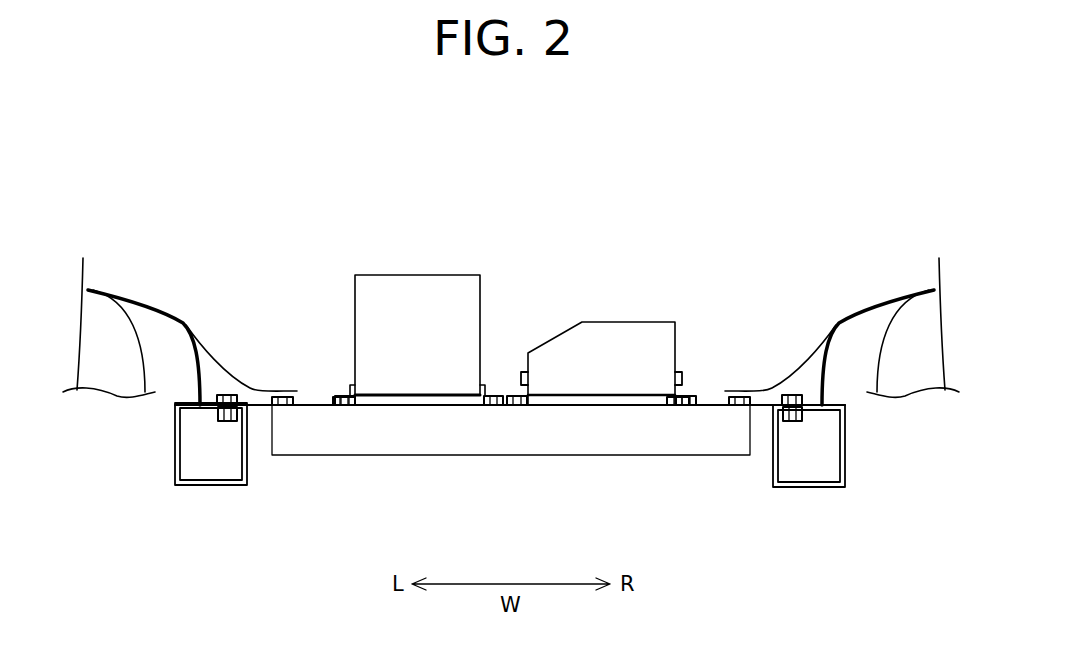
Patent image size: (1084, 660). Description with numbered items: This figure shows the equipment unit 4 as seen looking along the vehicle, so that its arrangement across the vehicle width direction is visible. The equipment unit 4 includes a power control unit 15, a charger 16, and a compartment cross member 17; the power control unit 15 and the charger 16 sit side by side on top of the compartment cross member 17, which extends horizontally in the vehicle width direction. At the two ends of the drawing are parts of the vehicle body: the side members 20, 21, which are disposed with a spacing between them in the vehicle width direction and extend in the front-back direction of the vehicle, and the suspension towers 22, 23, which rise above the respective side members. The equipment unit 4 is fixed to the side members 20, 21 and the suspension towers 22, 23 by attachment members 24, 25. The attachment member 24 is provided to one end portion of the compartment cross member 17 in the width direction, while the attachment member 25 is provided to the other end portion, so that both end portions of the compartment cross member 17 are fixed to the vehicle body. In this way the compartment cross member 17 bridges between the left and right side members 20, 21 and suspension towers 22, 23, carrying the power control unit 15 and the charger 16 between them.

The equipment unit 4 is at (680, 159).
The power control unit 15 is at (418, 283).
The charger 16 is at (627, 330).
The compartment cross member 17 is at (532, 448).
The side member 20 is at (805, 470).
The side member 21 is at (207, 470).
The suspension tower 22 is at (930, 290).
The suspension tower 23 is at (92, 290).
The attachment member 24 is at (863, 307).
The attachment member 25 is at (147, 303).